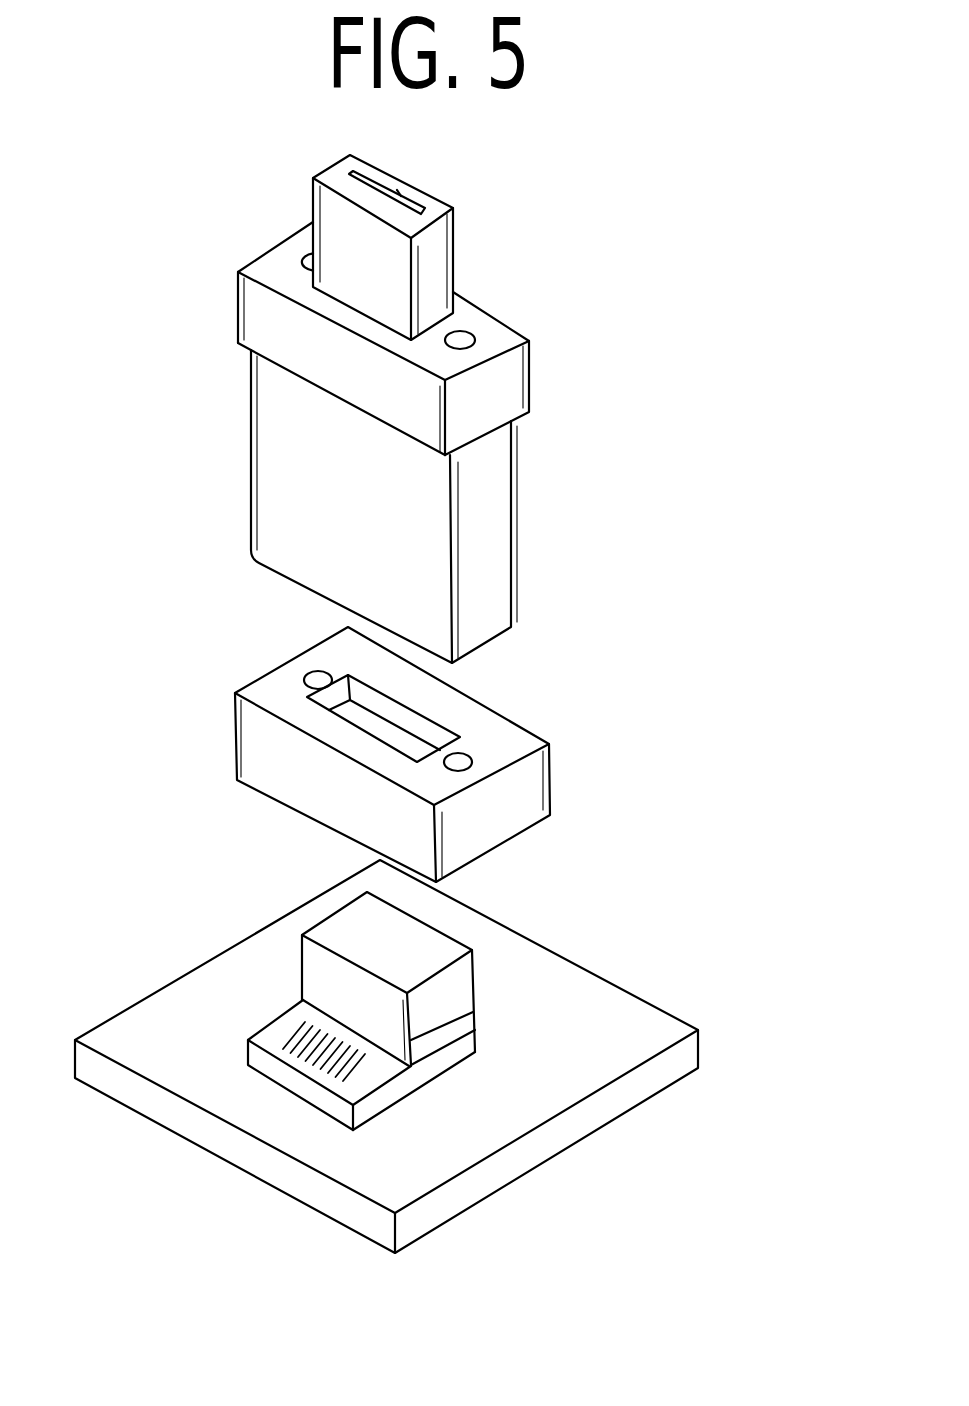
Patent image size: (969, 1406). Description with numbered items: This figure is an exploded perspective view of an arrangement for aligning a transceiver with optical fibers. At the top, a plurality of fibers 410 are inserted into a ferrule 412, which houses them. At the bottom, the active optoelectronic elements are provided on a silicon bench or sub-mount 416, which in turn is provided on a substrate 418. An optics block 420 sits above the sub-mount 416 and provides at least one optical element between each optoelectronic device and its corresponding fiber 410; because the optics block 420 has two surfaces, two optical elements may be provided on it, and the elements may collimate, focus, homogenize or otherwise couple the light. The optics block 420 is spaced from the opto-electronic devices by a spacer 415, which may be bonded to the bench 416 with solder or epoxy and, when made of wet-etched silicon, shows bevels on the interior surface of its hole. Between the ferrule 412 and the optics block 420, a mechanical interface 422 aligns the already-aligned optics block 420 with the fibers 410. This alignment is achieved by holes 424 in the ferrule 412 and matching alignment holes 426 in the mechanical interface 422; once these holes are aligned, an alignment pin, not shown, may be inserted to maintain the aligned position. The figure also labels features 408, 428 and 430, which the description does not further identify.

The connector tab 408 is at (278, 1038).
The fibers 410 is at (412, 188).
The ferrule 412 is at (487, 478).
The spacer 415 is at (477, 985).
The silicon bench or sub-mount 416 is at (327, 1085).
The substrate 418 is at (473, 1206).
The optics block 420 is at (477, 975).
The mechanical interface 422 is at (527, 810).
The holes 424 is at (470, 333).
The alignment holes 426 is at (477, 753).
The recess 428 is at (407, 727).
The hole 430 is at (360, 728).